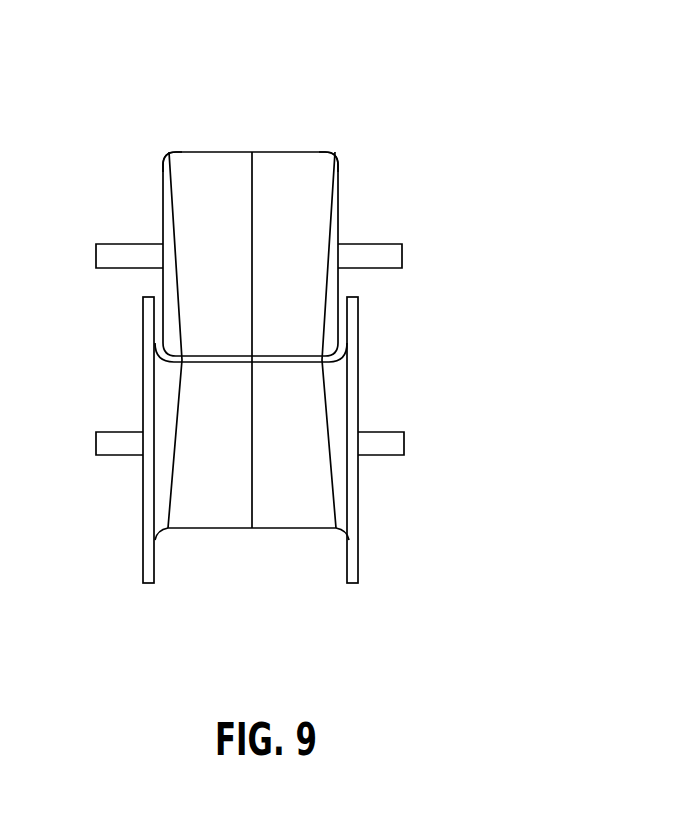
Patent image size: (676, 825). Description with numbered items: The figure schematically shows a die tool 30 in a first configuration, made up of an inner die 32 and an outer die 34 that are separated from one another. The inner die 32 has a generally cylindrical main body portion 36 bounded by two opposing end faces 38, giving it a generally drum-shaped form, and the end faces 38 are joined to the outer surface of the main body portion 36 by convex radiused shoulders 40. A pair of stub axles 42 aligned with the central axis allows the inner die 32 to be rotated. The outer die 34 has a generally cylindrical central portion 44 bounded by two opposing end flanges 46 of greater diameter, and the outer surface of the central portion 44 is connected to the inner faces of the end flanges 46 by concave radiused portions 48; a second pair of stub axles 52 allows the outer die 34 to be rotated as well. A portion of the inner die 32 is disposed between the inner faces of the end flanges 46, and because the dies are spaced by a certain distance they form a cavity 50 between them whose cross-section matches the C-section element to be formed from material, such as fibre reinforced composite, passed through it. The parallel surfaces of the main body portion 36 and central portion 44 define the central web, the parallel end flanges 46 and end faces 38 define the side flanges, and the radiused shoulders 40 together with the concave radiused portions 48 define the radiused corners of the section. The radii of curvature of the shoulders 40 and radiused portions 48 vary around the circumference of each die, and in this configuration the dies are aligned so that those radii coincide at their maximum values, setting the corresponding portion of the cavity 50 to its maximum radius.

The die tool 30 is at (482, 160).
The inner die 32 is at (304, 140).
The outer die 34 is at (133, 522).
The main body portion 36 is at (285, 162).
The end faces 38 is at (165, 215).
The radiused shoulders 40 is at (164, 160).
The stub axles 42 is at (402, 255).
The central portion 44 is at (236, 513).
The end flanges 46 is at (153, 584).
The concave radiused portions 48 is at (162, 537).
The cavity 50 is at (341, 357).
The stub axles 52 is at (405, 445).